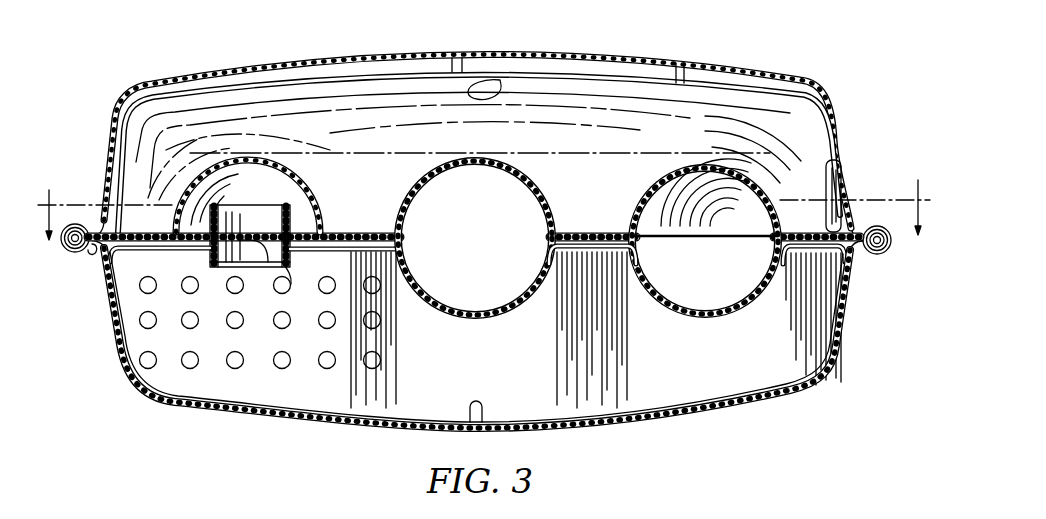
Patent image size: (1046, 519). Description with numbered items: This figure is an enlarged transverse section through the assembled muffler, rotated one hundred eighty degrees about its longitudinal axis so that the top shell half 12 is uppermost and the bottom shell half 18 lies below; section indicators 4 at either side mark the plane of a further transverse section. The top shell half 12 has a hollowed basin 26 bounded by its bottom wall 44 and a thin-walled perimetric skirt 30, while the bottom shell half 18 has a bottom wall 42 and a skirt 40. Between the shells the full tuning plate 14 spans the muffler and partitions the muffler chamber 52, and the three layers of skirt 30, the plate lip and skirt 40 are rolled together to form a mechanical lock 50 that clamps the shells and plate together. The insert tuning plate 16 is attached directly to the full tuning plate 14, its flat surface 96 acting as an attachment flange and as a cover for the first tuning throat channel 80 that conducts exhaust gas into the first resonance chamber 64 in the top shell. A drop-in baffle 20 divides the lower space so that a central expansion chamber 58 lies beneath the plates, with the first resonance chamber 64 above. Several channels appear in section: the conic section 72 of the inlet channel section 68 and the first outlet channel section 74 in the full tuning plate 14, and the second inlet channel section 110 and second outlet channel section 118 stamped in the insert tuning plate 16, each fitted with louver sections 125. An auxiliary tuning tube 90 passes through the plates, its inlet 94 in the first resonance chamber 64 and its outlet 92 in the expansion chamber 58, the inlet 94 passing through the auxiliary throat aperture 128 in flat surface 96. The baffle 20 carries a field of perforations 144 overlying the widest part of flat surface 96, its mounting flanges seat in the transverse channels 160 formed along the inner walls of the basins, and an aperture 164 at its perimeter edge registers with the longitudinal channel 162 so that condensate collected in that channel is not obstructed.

The section line 4- 4 is at (40, 174).
The top shell half 12 is at (815, 76).
The full tuning plate 14 is at (806, 228).
The insert tuning plate 16 is at (806, 253).
The bottom shell half 18 is at (765, 408).
The drop-in baffle 20 is at (783, 373).
The hollowed basin 26 is at (200, 393).
The skirt 30 is at (78, 222).
The skirt 40 is at (97, 268).
The bottom wall 42 is at (247, 447).
The bottom wall 44 is at (310, 80).
The mechanical lock 50 is at (72, 277).
The muffler chamber 52 is at (728, 118).
The central expansion chamber 58 is at (668, 370).
The first resonance chamber 64 is at (686, 108).
The right cylindrical receptacle wall 68 is at (658, 197).
The conic section 72 is at (723, 226).
The first outlet channel section 74 is at (497, 180).
The first tuning throat channel 80 is at (293, 197).
The auxiliary tuning tube 90 is at (215, 260).
The outlet 92 is at (280, 280).
The inlet 94 is at (276, 225).
The flat surface 96 is at (137, 248).
The second inlet channel section 110 is at (707, 307).
The second outlet channel section 118 is at (482, 304).
The louver sections 125 is at (448, 330).
The auxiliary throat aperture 128 is at (266, 262).
The field of perforations 144 is at (302, 387).
The transversely extending channels 160 is at (405, 62).
The longitudinal channel 162 is at (500, 80).
The aperture 164 is at (483, 410).